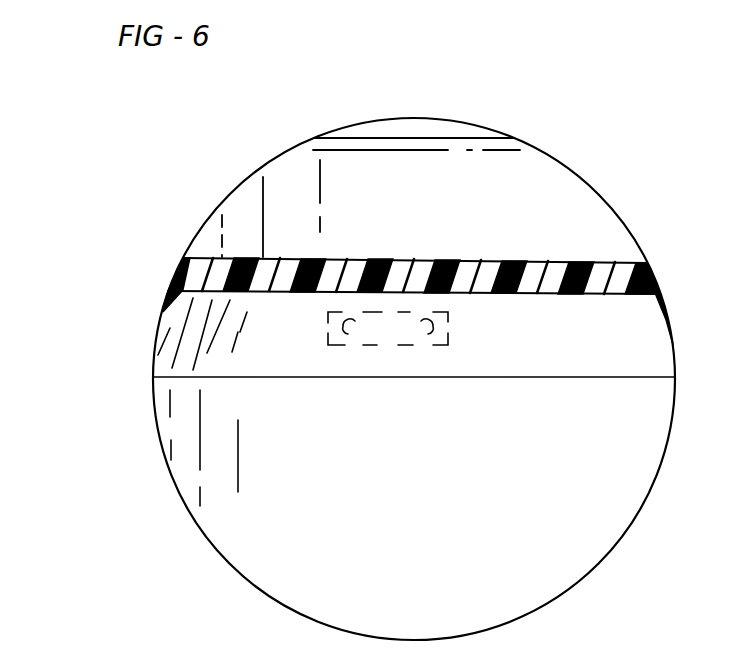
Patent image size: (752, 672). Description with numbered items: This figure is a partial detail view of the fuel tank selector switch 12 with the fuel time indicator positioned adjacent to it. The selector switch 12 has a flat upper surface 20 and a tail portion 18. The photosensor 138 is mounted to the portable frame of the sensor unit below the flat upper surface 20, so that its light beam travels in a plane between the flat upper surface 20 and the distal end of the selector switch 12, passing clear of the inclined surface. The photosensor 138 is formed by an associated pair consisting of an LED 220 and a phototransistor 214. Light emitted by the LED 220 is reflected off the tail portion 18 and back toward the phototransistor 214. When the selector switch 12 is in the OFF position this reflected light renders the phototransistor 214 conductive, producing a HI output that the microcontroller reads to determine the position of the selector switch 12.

The selector switch 12 is at (553, 294).
The tail portion 18 is at (280, 289).
The flat upper surface 20 is at (273, 257).
The photosensor 138 is at (382, 311).
The phototransistor 214 is at (435, 335).
The LED 220 is at (345, 334).